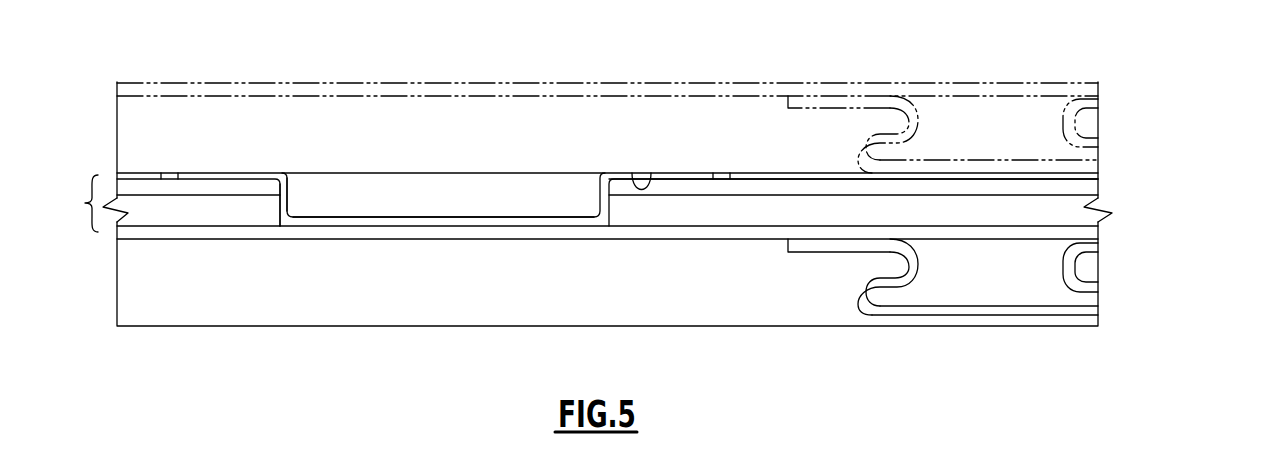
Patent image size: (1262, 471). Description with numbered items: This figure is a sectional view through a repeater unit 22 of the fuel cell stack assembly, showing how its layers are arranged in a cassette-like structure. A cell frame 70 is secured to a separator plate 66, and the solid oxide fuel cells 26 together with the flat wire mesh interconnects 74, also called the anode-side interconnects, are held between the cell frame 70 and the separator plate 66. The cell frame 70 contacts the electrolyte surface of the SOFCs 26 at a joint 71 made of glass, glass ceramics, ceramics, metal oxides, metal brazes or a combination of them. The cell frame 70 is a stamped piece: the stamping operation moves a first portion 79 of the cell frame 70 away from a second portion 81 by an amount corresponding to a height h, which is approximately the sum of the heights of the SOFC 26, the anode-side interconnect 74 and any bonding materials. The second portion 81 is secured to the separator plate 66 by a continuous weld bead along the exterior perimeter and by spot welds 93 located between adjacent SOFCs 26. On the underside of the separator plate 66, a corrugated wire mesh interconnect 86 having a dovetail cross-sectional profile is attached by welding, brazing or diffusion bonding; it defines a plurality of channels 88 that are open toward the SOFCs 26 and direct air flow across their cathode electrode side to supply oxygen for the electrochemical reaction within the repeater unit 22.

The repeater unit 22 is at (1146, 179).
The solid oxide fuel cell 26 is at (155, 190).
The separator plate 66 is at (784, 84).
The cell frame 70 is at (673, 172).
The joint 71 is at (632, 175).
The flat wire mesh interconnect 74 is at (741, 212).
The first portion 79 is at (280, 171).
The second portion 81 is at (428, 217).
The wire mesh interconnect 86 is at (917, 113).
The channel 88 is at (370, 140).
The spot weld 93 is at (459, 228).